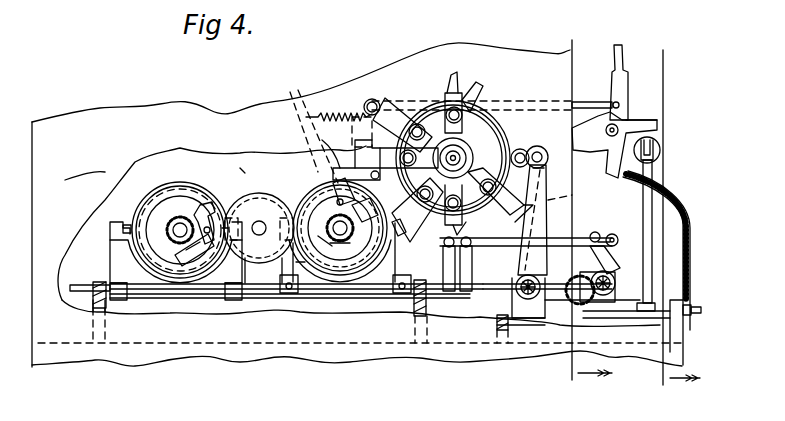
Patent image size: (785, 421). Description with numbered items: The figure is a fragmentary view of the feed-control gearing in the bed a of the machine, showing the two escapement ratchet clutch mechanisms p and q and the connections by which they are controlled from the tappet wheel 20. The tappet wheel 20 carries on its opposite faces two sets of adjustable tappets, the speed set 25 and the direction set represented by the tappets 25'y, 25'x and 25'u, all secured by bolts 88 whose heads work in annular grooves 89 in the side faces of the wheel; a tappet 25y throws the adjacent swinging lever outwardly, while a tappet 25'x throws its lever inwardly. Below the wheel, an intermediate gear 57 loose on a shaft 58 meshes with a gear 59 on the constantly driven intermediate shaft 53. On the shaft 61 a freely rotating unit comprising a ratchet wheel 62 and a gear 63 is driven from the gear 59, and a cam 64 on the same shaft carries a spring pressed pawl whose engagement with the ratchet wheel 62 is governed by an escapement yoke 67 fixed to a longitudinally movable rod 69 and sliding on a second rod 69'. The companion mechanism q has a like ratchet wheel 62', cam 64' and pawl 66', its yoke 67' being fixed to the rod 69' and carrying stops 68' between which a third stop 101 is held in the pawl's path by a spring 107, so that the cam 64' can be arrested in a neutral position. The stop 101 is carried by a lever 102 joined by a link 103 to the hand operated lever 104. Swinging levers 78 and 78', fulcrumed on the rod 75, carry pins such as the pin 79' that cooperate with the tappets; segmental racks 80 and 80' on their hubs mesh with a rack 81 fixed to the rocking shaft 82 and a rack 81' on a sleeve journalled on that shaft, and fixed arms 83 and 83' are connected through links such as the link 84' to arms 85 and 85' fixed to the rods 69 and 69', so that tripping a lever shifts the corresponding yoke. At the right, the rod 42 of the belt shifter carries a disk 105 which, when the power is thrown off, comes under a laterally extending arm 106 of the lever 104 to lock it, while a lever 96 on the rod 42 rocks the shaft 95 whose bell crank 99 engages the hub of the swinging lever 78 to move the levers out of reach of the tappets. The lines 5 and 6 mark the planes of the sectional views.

The bed a is at (85, 163).
The section line 5 is at (589, 211).
The section line 6 is at (680, 220).
The tappet wheel 20 is at (422, 128).
The tappets 25 is at (457, 92).
The tappet 25'y is at (492, 88).
The tappet 25y is at (468, 212).
The tappet 25'u is at (526, 147).
The tappet 25'x is at (579, 188).
The rod 42 is at (660, 128).
The intermediate shaft 53 is at (266, 222).
The intermediate gear 57 is at (352, 250).
The shaft 58 is at (346, 248).
The gear 59 is at (258, 200).
The shaft 61 is at (178, 228).
The ratchet wheel 62 is at (197, 213).
The ratchet wheel 62' is at (337, 287).
The gear 63 is at (170, 195).
The cam 64 is at (196, 200).
The cam 64' is at (316, 284).
The pawl 66' is at (258, 270).
The escapement yoke 67 is at (163, 261).
The escapement yoke 67' is at (288, 297).
The stops 68' is at (399, 211).
The rod 69 is at (86, 271).
The rod 69' is at (86, 318).
The rod 75 is at (516, 288).
The swinging lever 78 is at (543, 220).
The swinging lever 78' is at (553, 182).
The pin 79' is at (548, 138).
The segmental rack 80 is at (592, 327).
The segmental rack 80' is at (585, 275).
The rack 81 is at (585, 315).
The segmental rack 81' is at (618, 258).
The rocking shaft 82 is at (616, 283).
The fixed arm 83 is at (608, 219).
The fixed arm 83' is at (625, 229).
The link 84' is at (589, 220).
The arm 85 is at (439, 264).
The arm 85' is at (485, 264).
The bolts 88 is at (508, 101).
The annular grooves 89 is at (356, 130).
The rock shaft 95 is at (695, 313).
The lever 96 is at (655, 178).
The bell crank 99 is at (530, 316).
The third stop 101 is at (319, 147).
The lever 102 is at (366, 155).
The link 103 is at (588, 102).
The hand operated lever 104 is at (614, 68).
The abutment or disk 105 is at (662, 150).
The laterally extending arm 106 is at (640, 124).
The spring 107 is at (338, 108).
The escapement ratchet clutch mechanism p is at (198, 251).
The escapement ratchet clutch mechanism q is at (330, 196).